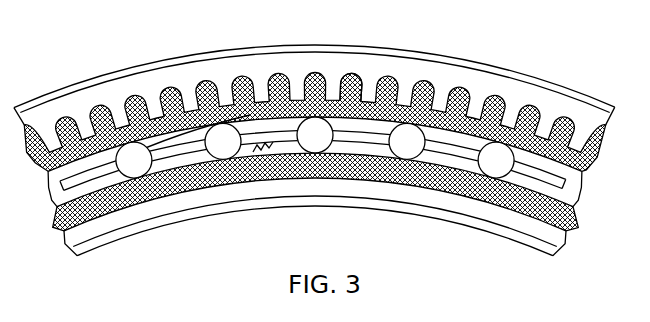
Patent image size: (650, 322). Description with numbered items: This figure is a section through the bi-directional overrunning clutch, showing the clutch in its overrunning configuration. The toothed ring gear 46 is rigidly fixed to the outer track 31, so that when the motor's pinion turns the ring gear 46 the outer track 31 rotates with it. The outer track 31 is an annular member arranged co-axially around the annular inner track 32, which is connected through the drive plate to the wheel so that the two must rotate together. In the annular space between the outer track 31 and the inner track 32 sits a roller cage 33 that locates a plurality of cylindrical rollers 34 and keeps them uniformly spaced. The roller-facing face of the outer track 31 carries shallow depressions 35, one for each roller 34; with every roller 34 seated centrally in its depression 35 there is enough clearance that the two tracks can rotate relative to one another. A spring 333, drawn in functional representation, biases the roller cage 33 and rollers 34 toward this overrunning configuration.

The outer track 31 is at (405, 105).
The inner track 32 is at (165, 188).
The roller cage 33 is at (357, 142).
The spring 333 is at (265, 144).
The cylindrical rollers 34 is at (303, 147).
The depressions 35 is at (208, 128).
The ring gear 46 is at (345, 81).